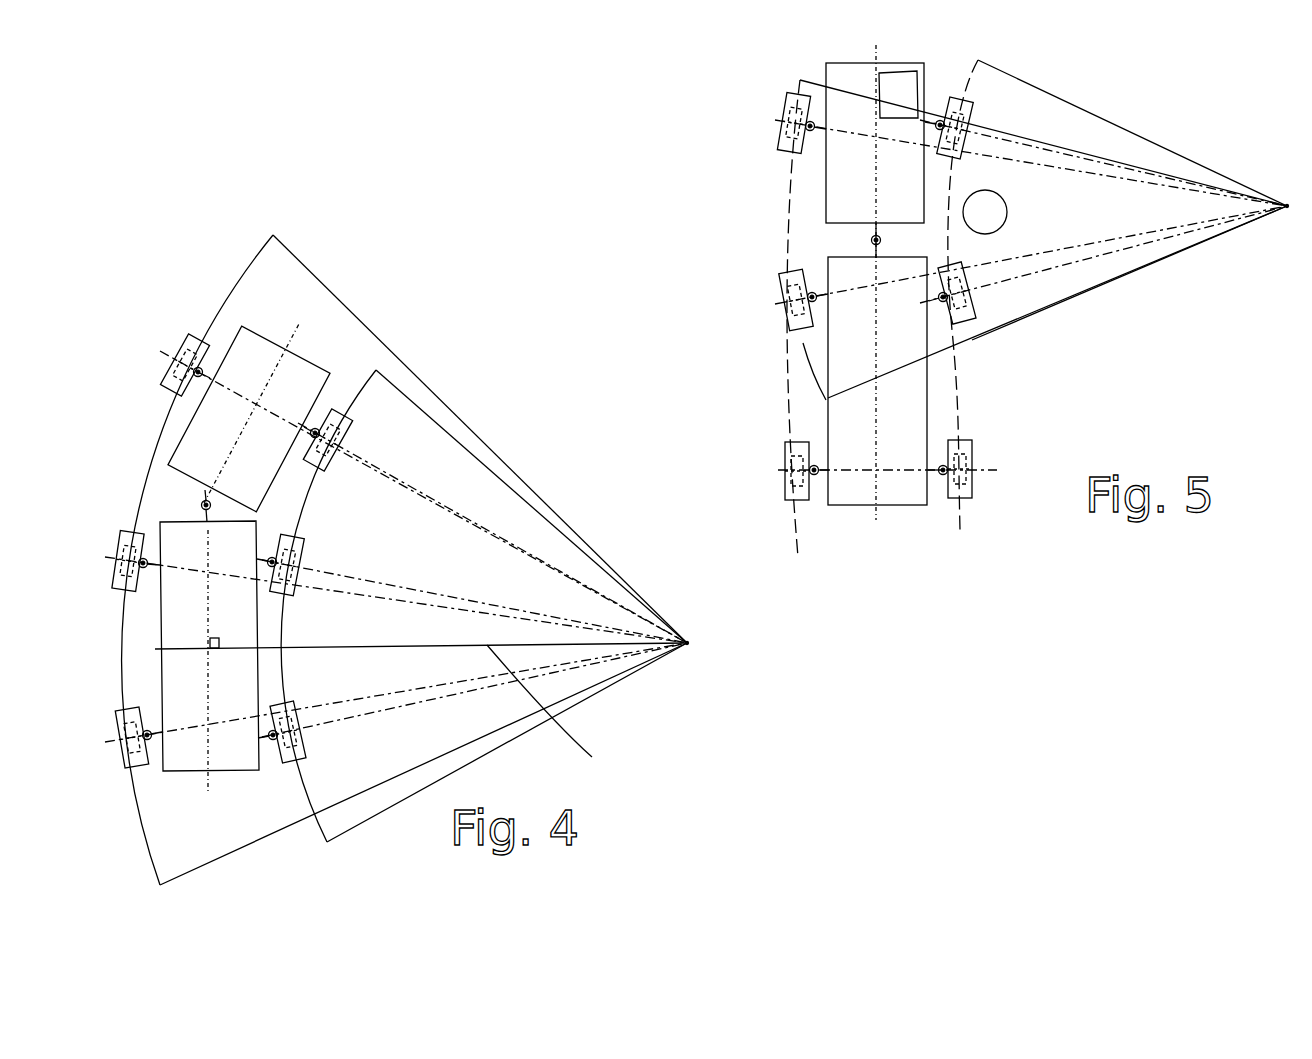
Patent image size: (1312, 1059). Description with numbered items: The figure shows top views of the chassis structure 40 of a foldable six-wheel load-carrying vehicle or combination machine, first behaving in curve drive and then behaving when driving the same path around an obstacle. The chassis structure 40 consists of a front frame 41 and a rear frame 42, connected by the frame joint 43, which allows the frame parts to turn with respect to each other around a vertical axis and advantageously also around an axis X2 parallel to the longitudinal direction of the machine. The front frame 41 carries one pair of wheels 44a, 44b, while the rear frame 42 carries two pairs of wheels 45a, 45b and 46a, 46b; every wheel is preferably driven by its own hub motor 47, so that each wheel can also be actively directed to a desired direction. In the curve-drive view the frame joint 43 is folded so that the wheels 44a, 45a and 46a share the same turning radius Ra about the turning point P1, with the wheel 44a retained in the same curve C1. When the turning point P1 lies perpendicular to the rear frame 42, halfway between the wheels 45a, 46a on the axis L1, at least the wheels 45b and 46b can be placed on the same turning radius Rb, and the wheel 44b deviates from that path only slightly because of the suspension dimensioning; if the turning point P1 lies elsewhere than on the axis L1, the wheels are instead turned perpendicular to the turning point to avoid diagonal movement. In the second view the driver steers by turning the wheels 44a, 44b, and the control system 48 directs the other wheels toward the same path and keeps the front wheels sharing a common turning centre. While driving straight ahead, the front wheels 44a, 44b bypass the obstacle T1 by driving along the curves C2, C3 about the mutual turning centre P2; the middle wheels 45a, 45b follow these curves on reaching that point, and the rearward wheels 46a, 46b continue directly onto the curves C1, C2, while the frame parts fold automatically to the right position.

In FIG. 4, the chassis structure 40 is at (145, 227).
In FIG. 5, the chassis structure 40 is at (688, 242).
In FIG. 4, the front frame 41 is at (253, 363).
In FIG. 5, the front frame 41 is at (838, 190).
In FIG. 4, the rear frame 42 is at (188, 545).
In FIG. 5, the rear frame 42 is at (857, 438).
In FIG. 4, the frame joint 43 is at (196, 497).
In FIG. 5, the frame joint 43 is at (870, 238).
In FIG. 4, the wheel 44a is at (330, 470).
In FIG. 4, the wheel 44b is at (165, 362).
In FIG. 4, the wheel 45a is at (292, 584).
In FIG. 4, the wheel 45b is at (120, 530).
In FIG. 4, the wheel 46a is at (300, 740).
In FIG. 4, the wheel 46b is at (120, 713).
In FIG. 4, the hub motor 47 is at (232, 552).
In FIG. 5, the hub motor 47 is at (876, 296).
In FIG. 5, the control system 48 is at (903, 85).
In FIG. 4, the turning point P1 is at (687, 643).
In FIG. 5, the turning centre P2 is at (1286, 205).
In FIG. 4, the turning radius Ra is at (410, 397).
In FIG. 4, the turning radius Rb is at (292, 257).
In FIG. 4, the curve C1 is at (363, 393).
In FIG. 5, the curve C2 is at (963, 337).
In FIG. 5, the curve C3 is at (803, 343).
In FIG. 4, the axis L1 is at (556, 719).
In FIG. 5, the obstacle T1 is at (997, 230).
In FIG. 4, the axis X2 is at (293, 336).
In FIG. 5, the axis X2 is at (880, 515).